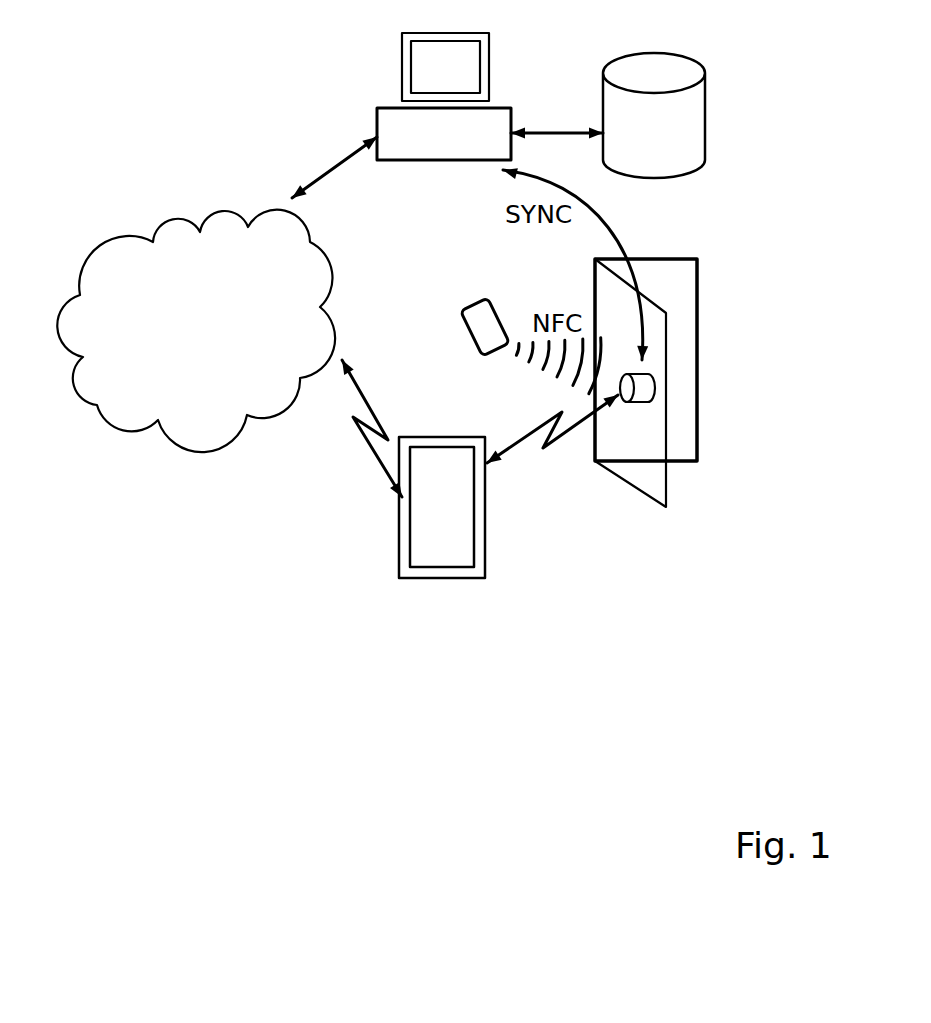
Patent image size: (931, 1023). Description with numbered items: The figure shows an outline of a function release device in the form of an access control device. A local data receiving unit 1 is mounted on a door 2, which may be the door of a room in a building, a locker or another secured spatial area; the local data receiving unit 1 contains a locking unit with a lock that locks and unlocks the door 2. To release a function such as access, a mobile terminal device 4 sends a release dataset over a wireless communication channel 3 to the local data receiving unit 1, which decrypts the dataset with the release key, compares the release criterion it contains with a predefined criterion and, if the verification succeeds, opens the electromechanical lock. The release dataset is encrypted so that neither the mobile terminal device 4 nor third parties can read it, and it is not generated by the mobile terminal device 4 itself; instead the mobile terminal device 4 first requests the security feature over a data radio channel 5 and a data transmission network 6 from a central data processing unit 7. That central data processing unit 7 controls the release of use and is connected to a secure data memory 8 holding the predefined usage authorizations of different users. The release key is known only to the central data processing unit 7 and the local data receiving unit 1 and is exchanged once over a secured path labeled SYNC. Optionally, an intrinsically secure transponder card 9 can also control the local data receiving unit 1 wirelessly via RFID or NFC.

The local data receiving unit 1 is at (638, 395).
The door 2 is at (697, 375).
The wireless communication channel 3 is at (523, 442).
The mobile terminal device 4 is at (437, 578).
The data radio channel 5 is at (360, 443).
The data transmission network 6 is at (205, 222).
The central data processing unit 7 is at (395, 107).
The secure data memory 8 is at (705, 117).
The transponder card 9 is at (495, 315).